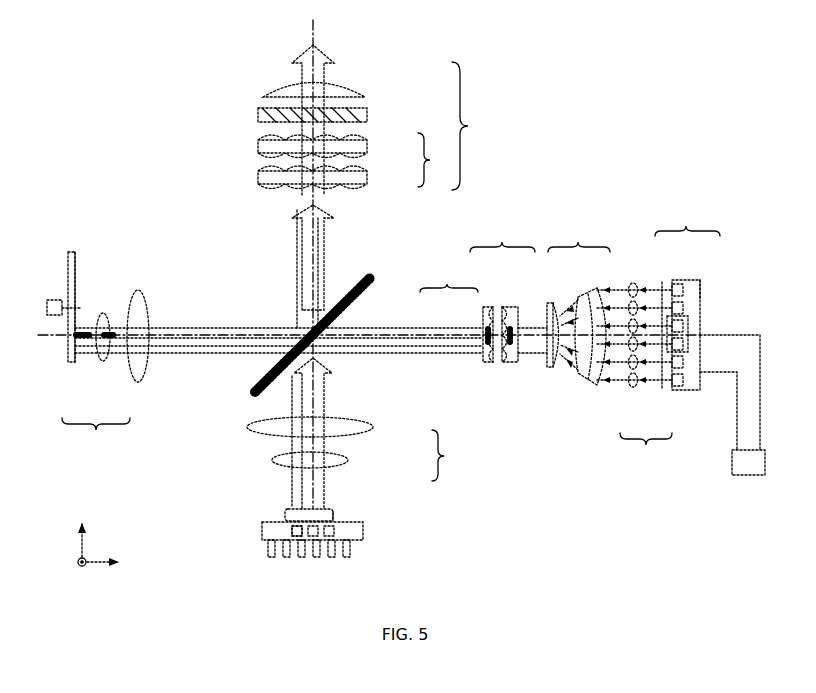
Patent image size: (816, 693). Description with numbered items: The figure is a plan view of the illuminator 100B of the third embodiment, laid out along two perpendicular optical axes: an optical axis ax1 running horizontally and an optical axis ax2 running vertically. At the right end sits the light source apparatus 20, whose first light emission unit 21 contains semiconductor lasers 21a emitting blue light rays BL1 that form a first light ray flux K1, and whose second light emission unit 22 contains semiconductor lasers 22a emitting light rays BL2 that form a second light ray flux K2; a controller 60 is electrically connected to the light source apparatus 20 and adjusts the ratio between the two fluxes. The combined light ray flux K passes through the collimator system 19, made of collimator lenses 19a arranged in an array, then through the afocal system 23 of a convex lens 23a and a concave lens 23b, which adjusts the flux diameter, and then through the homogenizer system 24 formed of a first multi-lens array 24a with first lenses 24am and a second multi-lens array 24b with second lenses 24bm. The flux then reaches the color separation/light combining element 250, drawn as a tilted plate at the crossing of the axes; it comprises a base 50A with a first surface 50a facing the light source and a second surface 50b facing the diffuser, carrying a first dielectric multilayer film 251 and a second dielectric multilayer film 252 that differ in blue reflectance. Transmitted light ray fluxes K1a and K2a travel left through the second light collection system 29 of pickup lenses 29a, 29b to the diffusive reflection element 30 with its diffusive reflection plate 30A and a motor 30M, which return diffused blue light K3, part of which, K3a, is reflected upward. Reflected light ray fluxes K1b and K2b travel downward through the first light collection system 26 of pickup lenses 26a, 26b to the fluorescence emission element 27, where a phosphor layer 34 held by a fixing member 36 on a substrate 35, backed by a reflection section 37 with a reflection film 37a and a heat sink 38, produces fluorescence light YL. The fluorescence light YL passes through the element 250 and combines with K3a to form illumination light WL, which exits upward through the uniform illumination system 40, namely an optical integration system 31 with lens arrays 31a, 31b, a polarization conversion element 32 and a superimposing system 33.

The illuminator 100B is at (738, 133).
The collimator system 19 is at (631, 272).
The collimator lens 19a is at (629, 387).
The light source apparatus 20 is at (700, 299).
The first light emission unit 21 is at (671, 282).
The semiconductor laser 21a is at (689, 330).
The second light emission unit 22 is at (697, 280).
The semiconductor laser 22a is at (701, 286).
The afocal system 23 is at (579, 305).
The convex lens 23a is at (592, 290).
The concave lens 23b is at (552, 302).
The homogenizer system 24 is at (510, 318).
The first multi-lens array 24a is at (512, 305).
The second multi-lens array 24b is at (490, 305).
The first lens 24am is at (514, 364).
The second lens 24bm is at (491, 364).
The first light collection system 26 is at (355, 449).
The pickup lens 26a is at (372, 430).
The pickup lens 26b is at (347, 463).
The fluorescence emission element 27 is at (322, 547).
The second light collection system 29 is at (105, 370).
The pickup lens 29a is at (137, 383).
The pickup lens 29b is at (103, 362).
The diffusive reflection element 30 is at (72, 244).
The diffusive reflection plate 30A is at (77, 279).
The motor 30M is at (56, 291).
The optical integration system 31 is at (355, 161).
The lens array 31a is at (370, 176).
The lens array 31b is at (370, 148).
The polarization conversion element 32 is at (370, 114).
The superimposing system 33 is at (360, 86).
The phosphor layer 34 is at (284, 512).
The substrate 35 is at (262, 529).
The fixing member 36 is at (337, 515).
The reflection section 37 is at (326, 548).
The reflection film 37a is at (296, 548).
The heat sink 38 is at (263, 544).
The uniform illumination system 40 is at (374, 126).
The first surface 50a is at (366, 284).
The second surface 50b is at (272, 355).
The base 50A is at (252, 390).
The controller 60 is at (742, 478).
The color separation/light combining element 250 is at (374, 275).
The first dielectric multilayer film 251 is at (338, 326).
The second dielectric multilayer film 252 is at (238, 366).
The optical axis ax1 is at (51, 340).
The optical axis ax2 is at (317, 38).
The light ray flux K is at (546, 365).
The first light ray flux K1 is at (428, 333).
The second light ray flux K2 is at (458, 333).
The light ray flux K1a is at (178, 352).
The light ray flux K1b is at (326, 390).
The light ray flux K2a is at (152, 358).
The light ray flux K2b is at (252, 428).
The diffused blue light K3 is at (160, 330).
The diffused blue light K3a is at (296, 300).
The illumination light WL is at (298, 79).
The fluorescence light YL is at (300, 262).
The light ray BL1 is at (662, 372).
The light ray BL2 is at (660, 397).